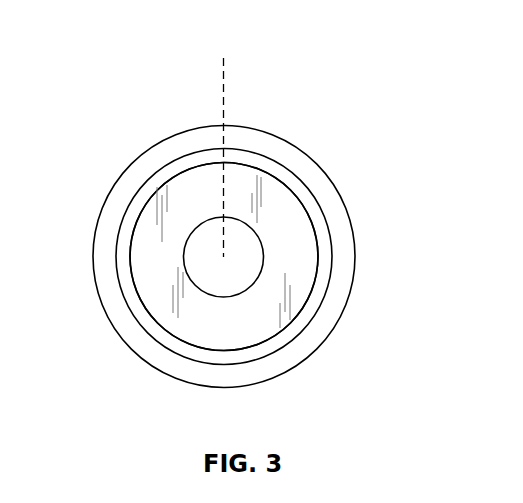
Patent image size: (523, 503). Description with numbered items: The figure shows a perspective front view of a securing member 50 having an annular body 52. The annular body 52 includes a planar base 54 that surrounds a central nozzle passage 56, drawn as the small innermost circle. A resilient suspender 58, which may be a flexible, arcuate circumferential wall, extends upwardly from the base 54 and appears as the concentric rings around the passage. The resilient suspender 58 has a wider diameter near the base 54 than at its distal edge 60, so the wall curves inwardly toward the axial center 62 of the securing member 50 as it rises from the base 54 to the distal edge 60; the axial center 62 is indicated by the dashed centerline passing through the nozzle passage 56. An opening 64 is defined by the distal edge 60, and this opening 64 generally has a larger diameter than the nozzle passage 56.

The securing member 50 is at (289, 108).
The annular body 52 is at (102, 210).
The planar base 54 is at (267, 218).
The nozzle passage 56 is at (215, 233).
The resilient suspender 58 is at (148, 350).
The distal edge 60 is at (162, 180).
The axial center 62 is at (225, 72).
The opening 64 is at (305, 258).